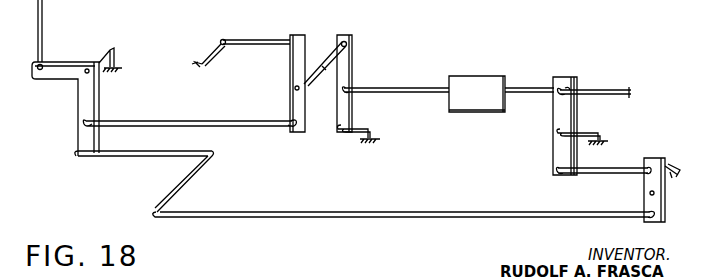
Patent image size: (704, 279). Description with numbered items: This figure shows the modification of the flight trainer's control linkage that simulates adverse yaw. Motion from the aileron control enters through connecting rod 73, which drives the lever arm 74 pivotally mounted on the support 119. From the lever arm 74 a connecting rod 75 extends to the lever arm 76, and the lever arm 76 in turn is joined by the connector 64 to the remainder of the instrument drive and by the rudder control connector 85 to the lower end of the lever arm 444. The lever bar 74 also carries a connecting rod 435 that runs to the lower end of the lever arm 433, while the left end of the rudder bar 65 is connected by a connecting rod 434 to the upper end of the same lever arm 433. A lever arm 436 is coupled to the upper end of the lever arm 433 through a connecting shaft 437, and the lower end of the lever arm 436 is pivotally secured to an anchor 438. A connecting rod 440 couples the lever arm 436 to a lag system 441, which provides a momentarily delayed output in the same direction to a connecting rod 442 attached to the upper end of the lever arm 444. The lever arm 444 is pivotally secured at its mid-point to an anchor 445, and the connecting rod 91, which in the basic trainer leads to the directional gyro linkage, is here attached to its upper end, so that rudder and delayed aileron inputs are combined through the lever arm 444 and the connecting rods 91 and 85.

The connecting rod 73 is at (43, 10).
The lever arm 74 is at (60, 62).
The support 119 is at (108, 46).
The connecting rod 435 is at (133, 120).
The connecting rod 434 is at (265, 39).
The rudder bar 65 is at (211, 55).
The connecting shaft 437 is at (314, 64).
The lever arm 433 is at (288, 110).
The lever arm 436 is at (353, 62).
The anchor 438 is at (359, 139).
The connecting rod 440 is at (386, 93).
The lag system 441 is at (493, 54).
The connecting rod 442 is at (518, 87).
The connecting rod 91 is at (598, 89).
The anchor 445 is at (583, 128).
The lever arm 444 is at (553, 156).
The rudder control connector 85 is at (586, 175).
The lever arm 76 is at (651, 157).
The connector 64 is at (673, 181).
The connecting rod 75 is at (385, 211).